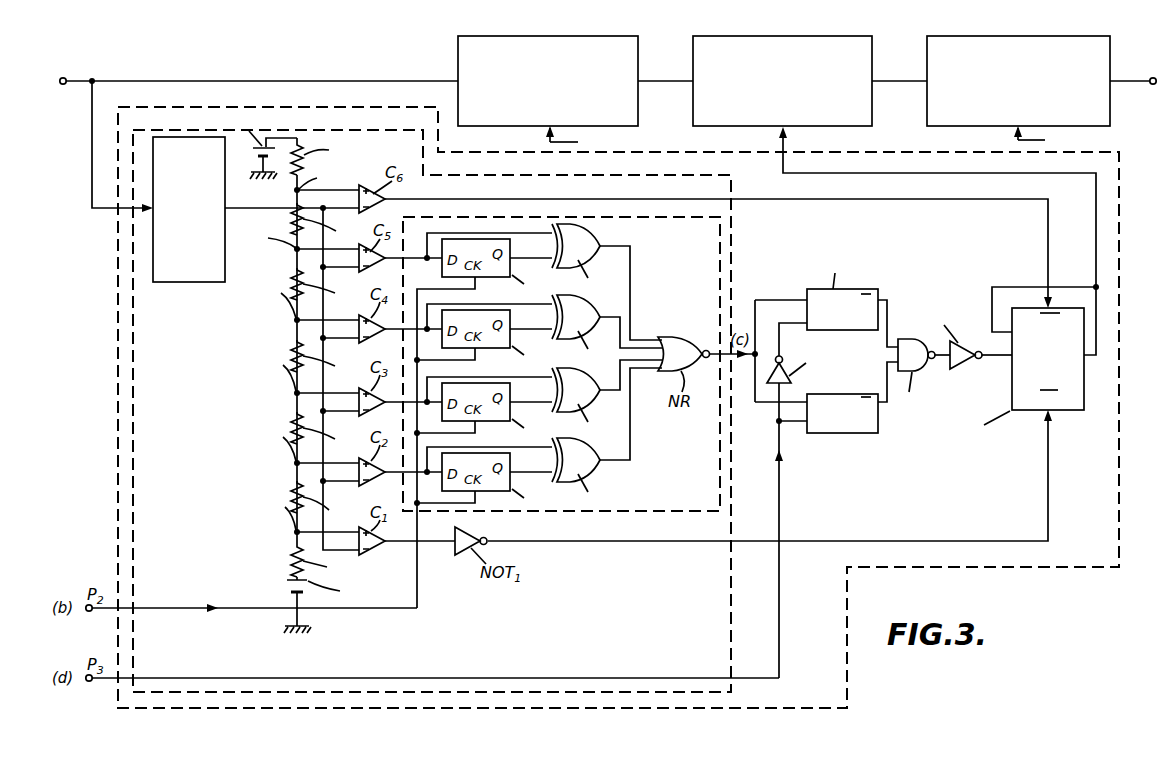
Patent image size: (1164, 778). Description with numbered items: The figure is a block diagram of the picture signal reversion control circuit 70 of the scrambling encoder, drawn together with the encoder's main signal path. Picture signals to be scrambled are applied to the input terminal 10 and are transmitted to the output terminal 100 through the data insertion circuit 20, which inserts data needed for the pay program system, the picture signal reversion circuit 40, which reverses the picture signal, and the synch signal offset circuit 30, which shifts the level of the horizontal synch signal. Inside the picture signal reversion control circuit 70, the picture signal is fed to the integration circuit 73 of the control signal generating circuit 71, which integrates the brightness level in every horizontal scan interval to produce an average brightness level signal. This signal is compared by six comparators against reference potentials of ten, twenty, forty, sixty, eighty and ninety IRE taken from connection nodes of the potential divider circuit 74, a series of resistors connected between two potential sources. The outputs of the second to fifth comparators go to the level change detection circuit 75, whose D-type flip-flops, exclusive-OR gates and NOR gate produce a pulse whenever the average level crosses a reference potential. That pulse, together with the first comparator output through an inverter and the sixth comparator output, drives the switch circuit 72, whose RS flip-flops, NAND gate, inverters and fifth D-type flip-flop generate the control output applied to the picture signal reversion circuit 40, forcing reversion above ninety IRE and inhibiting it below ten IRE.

The input terminal 10 is at (68, 79).
The data insertion circuit 20 is at (640, 68).
The picture signal reversion circuit 40 is at (874, 67).
The synch signal offset circuit 30 is at (1112, 67).
The output terminal 100 is at (1150, 84).
The picture signal reversion control circuit 70 is at (782, 707).
The control signal generating circuit 71 is at (733, 568).
The switch circuit 72 is at (935, 272).
The integration circuit 73 is at (198, 284).
The potential divider circuit 74 is at (224, 368).
The level change detection circuit 75 is at (677, 494).